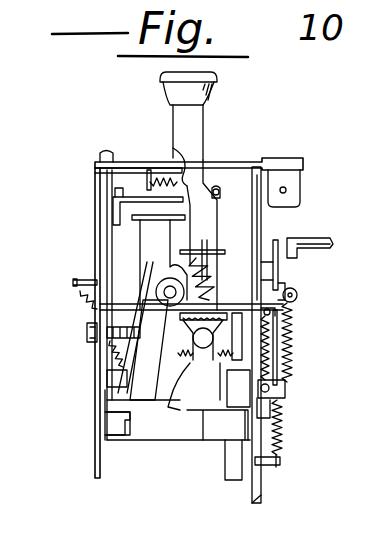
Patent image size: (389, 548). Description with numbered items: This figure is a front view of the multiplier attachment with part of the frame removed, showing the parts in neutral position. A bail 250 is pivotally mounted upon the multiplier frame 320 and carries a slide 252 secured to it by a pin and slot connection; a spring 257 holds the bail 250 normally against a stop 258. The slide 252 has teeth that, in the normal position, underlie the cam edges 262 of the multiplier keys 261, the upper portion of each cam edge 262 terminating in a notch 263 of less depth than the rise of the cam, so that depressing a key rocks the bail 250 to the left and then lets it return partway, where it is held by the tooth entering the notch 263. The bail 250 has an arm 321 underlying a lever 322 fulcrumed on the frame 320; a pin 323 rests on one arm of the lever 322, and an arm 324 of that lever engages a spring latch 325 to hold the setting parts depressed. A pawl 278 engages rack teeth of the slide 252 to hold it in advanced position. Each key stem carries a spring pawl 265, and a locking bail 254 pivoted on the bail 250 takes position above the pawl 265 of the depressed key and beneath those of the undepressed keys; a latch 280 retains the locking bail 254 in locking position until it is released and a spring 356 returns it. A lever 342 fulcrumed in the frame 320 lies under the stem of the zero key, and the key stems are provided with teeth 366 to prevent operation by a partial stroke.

The bail 250 is at (145, 245).
The slide 252 is at (131, 218).
The locking bail 254 is at (150, 400).
The spring 257 is at (281, 430).
The stop 258 is at (87, 338).
The multiplier key 261 is at (190, 125).
The cam edge 262 is at (184, 190).
The notch 263 is at (172, 152).
The spring pawl 265 is at (185, 392).
The pawl 278 is at (112, 205).
The latch 280 is at (135, 428).
The multiplier frame 320 is at (259, 232).
The arm 321 is at (298, 296).
The lever 322 is at (283, 270).
The pin 323 is at (318, 242).
The arm 324 is at (275, 351).
The spring latch 325 is at (284, 392).
The lever 342 is at (216, 434).
The spring 356 is at (80, 300).
The teeth 366 is at (185, 410).